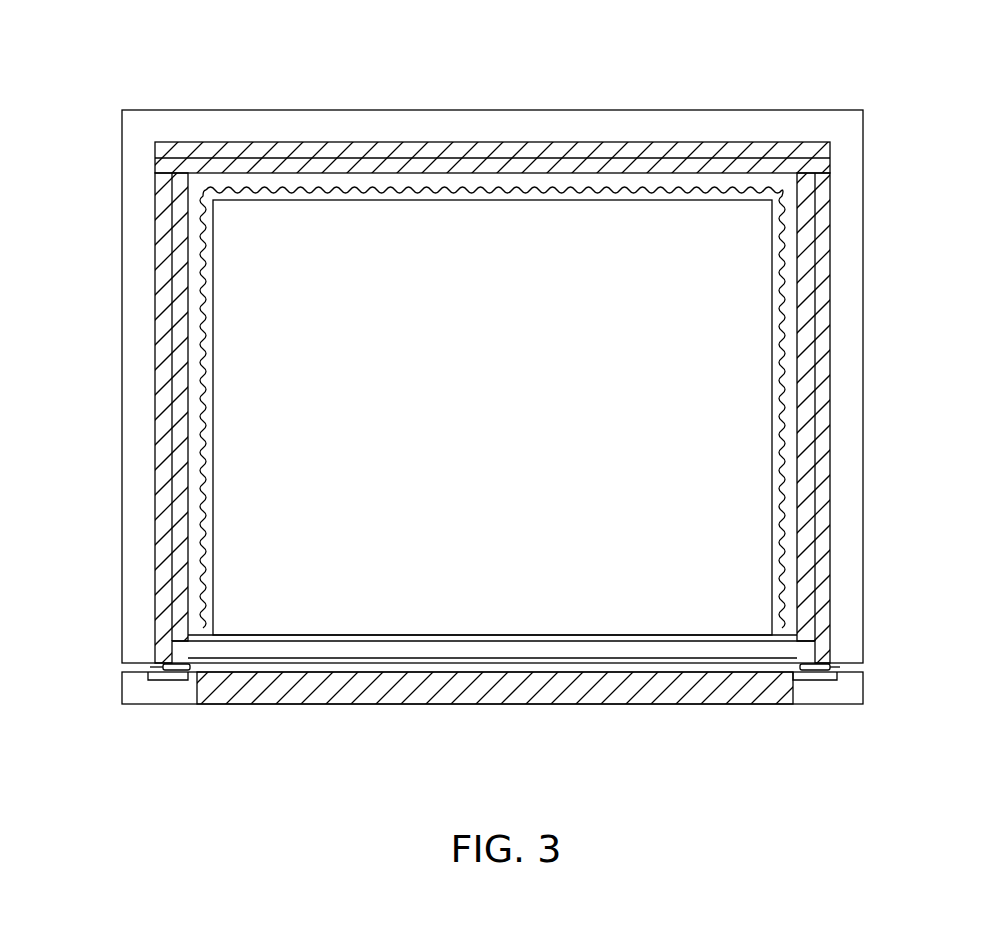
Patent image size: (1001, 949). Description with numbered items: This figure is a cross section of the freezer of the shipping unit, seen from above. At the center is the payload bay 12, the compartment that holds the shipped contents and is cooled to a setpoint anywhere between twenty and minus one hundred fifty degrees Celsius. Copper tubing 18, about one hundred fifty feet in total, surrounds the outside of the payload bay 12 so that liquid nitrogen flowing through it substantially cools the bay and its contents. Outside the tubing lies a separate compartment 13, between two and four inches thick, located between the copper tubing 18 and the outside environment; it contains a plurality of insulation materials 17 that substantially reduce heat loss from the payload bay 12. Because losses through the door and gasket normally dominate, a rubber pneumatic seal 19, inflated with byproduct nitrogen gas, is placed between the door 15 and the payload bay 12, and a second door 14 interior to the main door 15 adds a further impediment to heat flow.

The payload bay 12 is at (535, 185).
The separate compartment 13 is at (143, 130).
The second door 14 is at (693, 645).
The door 15 is at (817, 688).
The insulation materials 17 is at (287, 130).
The copper tubing 18 is at (749, 190).
The rubber pneumatic seal 19 is at (150, 667).